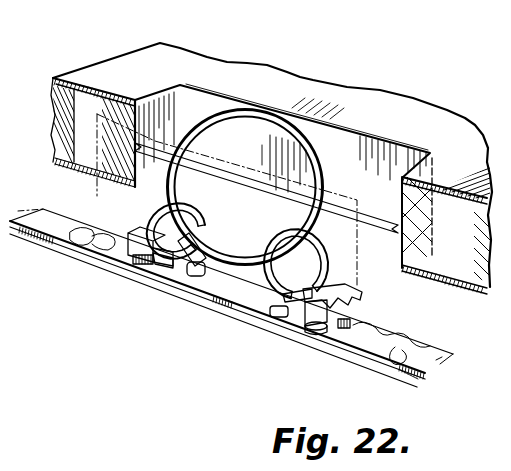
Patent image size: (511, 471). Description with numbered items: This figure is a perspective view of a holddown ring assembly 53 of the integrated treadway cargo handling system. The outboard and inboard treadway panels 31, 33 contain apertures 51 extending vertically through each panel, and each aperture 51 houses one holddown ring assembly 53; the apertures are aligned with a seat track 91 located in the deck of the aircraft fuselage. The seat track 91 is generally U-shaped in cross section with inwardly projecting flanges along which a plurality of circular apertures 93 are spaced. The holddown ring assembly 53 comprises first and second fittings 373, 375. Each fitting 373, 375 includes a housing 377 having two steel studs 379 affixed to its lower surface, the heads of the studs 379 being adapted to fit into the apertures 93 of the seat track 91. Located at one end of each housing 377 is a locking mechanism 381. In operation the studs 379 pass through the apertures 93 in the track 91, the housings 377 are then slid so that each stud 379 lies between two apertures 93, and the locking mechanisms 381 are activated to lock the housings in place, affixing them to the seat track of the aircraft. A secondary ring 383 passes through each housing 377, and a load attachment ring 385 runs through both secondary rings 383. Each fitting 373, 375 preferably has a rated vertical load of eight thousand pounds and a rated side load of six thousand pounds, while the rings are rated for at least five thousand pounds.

The outboard treadway panel 31 is at (193, 65).
The inboard treadway panel 33 is at (265, 163).
The aperture 51 is at (282, 110).
The holddown ring assembly 53 is at (308, 138).
The seat track 91 is at (413, 337).
The circular aperture 93 is at (403, 348).
The first fitting 373 is at (127, 223).
The second fitting 375 is at (372, 303).
The housing 377 is at (161, 216).
The steel stud 379 is at (143, 266).
The locking mechanism 381 is at (132, 240).
The secondary ring 383 is at (258, 290).
The load attachment ring 385 is at (247, 108).